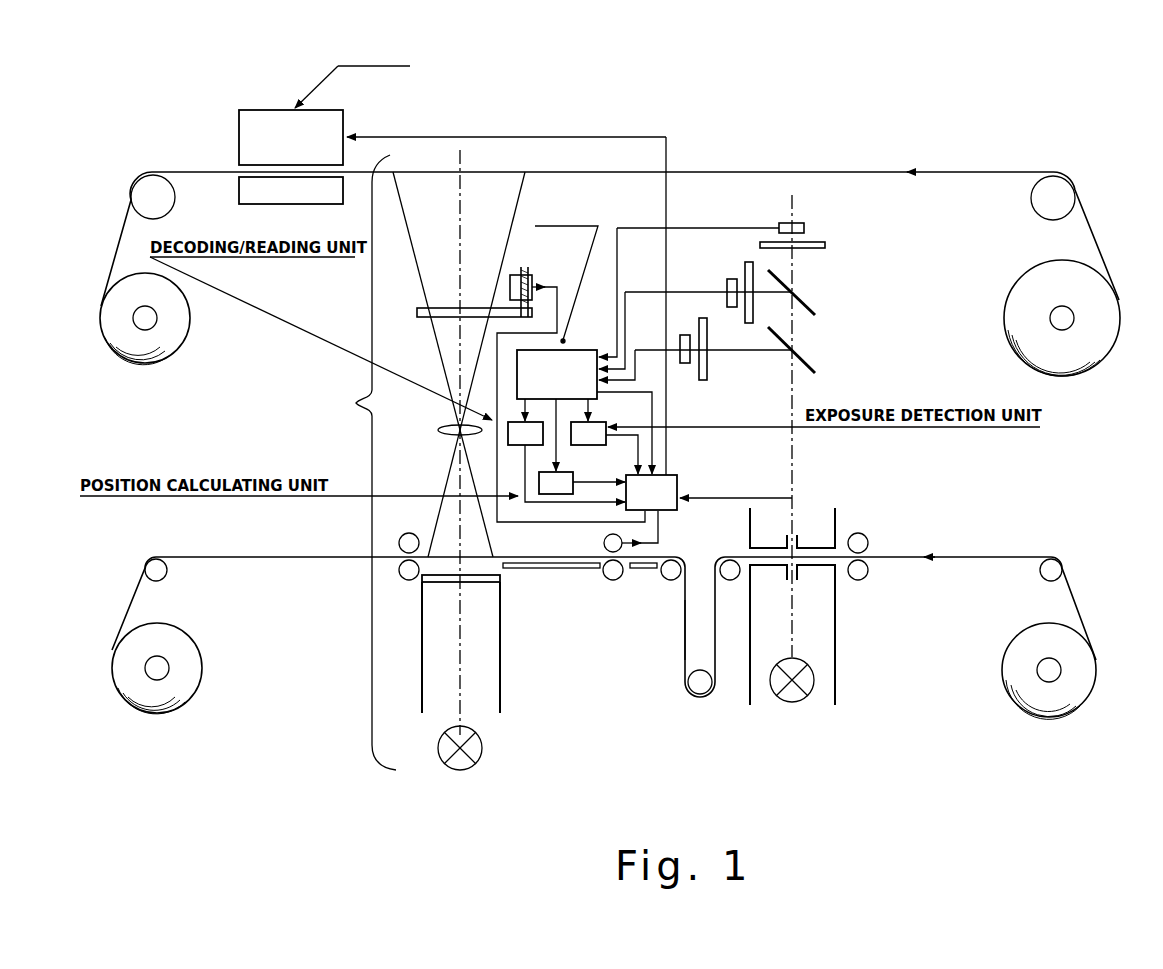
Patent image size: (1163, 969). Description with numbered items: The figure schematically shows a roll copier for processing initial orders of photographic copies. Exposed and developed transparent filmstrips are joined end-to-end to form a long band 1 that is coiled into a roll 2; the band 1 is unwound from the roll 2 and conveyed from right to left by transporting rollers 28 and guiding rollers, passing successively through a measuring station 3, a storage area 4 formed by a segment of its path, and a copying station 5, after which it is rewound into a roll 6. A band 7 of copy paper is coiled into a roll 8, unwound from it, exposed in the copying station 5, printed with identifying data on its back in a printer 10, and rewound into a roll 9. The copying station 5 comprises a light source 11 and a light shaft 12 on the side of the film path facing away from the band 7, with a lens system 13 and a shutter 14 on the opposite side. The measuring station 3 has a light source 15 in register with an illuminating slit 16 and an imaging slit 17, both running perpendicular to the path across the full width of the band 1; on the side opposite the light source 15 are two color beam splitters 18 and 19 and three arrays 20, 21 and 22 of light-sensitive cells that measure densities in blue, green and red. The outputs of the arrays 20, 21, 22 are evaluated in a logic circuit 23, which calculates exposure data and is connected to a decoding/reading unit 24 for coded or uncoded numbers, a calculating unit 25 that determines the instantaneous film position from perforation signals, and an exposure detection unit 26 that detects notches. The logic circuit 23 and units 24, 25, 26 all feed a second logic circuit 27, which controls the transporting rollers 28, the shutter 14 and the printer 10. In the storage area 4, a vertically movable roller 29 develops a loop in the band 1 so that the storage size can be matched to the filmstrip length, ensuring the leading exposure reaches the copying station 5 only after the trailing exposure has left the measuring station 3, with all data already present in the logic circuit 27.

The band 1 is at (955, 557).
The roll 2 is at (1080, 688).
The measuring station 3 is at (863, 587).
The storage area 4 is at (677, 612).
The copying station 5 is at (362, 462).
The roll 6 is at (134, 688).
The band 7 is at (968, 172).
The roll 8 is at (1098, 345).
The roll 9 is at (122, 342).
The printer 10 is at (248, 122).
The light source 11 is at (472, 750).
The light shaft 12 is at (486, 640).
The lens system 13 is at (440, 437).
The shutter 14 is at (440, 320).
The light source 15 is at (787, 704).
The illuminating slit 16 is at (787, 585).
The imaging slit 17 is at (797, 533).
The color beam splitter 18 is at (812, 355).
The color beam splitter 19 is at (812, 298).
The array of light-sensitive cells 20 is at (710, 373).
The array of light-sensitive cells 21 is at (738, 275).
The array of light-sensitive cells 22 is at (822, 241).
The logic circuit 23 is at (567, 345).
The decoding/reading unit 24 is at (520, 447).
The calculating unit 25 is at (575, 476).
The exposure detection unit 26 is at (607, 425).
The second logic circuit 27 is at (682, 490).
The transporting rollers 28 is at (604, 541).
The roller 29 is at (694, 692).